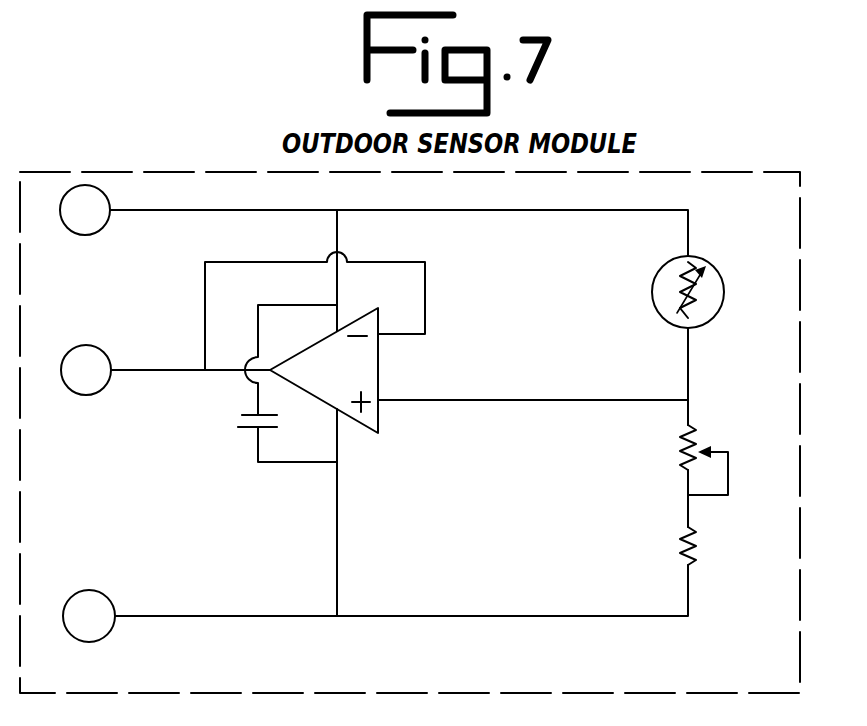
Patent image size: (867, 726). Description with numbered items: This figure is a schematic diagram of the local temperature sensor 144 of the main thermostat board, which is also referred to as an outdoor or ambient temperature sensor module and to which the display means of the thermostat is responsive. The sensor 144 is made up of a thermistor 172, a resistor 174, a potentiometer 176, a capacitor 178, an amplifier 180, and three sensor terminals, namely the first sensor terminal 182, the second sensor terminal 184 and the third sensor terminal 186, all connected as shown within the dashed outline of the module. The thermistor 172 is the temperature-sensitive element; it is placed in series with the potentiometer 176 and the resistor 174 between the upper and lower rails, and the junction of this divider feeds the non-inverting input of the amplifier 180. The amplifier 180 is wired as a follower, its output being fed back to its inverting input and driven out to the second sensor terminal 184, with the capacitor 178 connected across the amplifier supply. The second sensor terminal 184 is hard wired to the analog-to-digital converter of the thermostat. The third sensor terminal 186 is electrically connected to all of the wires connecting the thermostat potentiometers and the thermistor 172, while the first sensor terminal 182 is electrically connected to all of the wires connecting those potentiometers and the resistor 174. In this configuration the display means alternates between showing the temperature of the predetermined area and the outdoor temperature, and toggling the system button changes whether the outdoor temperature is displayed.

The local temperature sensor 144 is at (77, 168).
The thermistor 172 is at (715, 263).
The resistor 174 is at (695, 563).
The potentiometer 176 is at (683, 442).
The capacitor 178 is at (247, 430).
The amplifier 180 is at (380, 367).
The sensor S1 182 is at (108, 632).
The sensor S2 184 is at (98, 388).
The sensor S3 186 is at (95, 229).